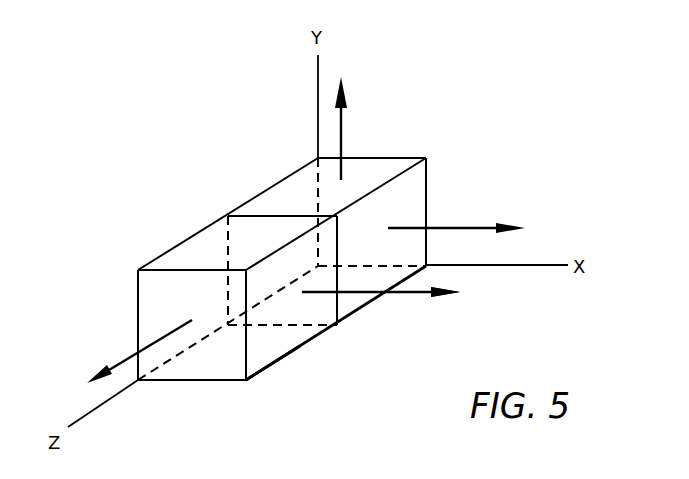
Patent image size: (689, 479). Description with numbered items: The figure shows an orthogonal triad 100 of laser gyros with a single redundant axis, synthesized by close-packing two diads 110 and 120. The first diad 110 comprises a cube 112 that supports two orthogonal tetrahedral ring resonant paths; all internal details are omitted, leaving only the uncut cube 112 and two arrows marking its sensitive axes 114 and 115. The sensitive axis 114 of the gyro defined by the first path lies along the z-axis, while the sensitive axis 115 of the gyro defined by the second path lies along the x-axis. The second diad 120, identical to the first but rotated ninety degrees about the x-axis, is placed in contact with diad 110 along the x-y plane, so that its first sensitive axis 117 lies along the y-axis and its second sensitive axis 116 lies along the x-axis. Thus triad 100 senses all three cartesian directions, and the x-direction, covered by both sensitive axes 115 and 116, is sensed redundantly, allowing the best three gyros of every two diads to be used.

The orthogonal triad 100 is at (155, 186).
The diad 110 is at (348, 349).
The cube 112 is at (256, 366).
The sensitive axis 114 is at (128, 357).
The sensitive axis 115 is at (400, 296).
The second sensitive axis 116 is at (458, 228).
The first sensitive axis 117 is at (345, 132).
The second diad 120 is at (487, 287).